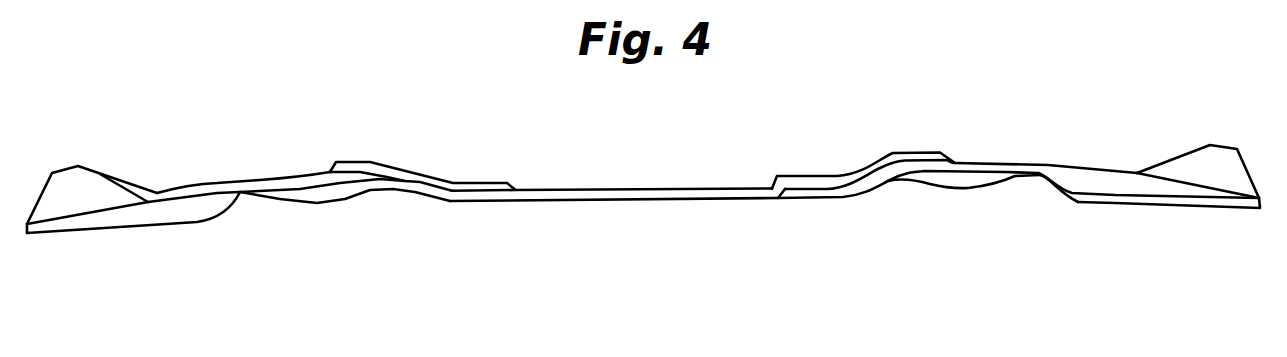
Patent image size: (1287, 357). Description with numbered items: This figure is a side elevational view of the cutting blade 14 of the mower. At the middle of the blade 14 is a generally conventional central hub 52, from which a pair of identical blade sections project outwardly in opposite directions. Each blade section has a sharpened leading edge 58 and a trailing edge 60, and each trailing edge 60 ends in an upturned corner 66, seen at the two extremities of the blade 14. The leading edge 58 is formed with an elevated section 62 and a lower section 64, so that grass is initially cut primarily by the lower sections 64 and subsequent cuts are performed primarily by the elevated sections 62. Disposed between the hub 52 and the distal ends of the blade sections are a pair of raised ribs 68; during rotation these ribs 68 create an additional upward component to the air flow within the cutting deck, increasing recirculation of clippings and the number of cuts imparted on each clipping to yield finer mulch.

The cutting blade 14 is at (498, 204).
The central hub 52 is at (624, 189).
The leading edge 58 is at (197, 223).
The trailing edge 60 is at (222, 187).
The elevated section 62 is at (990, 165).
The lower section 64 is at (88, 234).
The upturned corner 66 is at (63, 178).
The raised ribs 68 is at (380, 170).